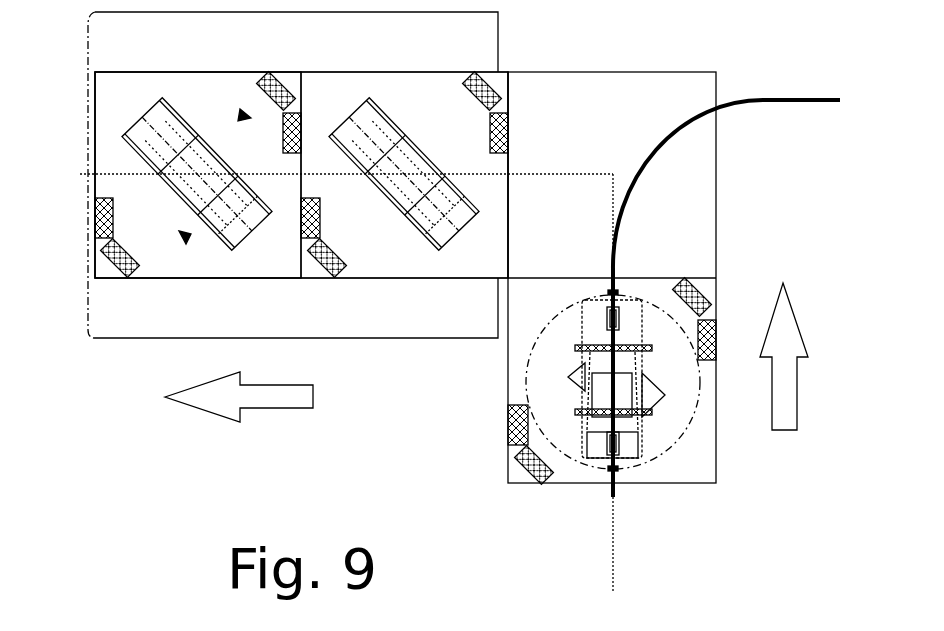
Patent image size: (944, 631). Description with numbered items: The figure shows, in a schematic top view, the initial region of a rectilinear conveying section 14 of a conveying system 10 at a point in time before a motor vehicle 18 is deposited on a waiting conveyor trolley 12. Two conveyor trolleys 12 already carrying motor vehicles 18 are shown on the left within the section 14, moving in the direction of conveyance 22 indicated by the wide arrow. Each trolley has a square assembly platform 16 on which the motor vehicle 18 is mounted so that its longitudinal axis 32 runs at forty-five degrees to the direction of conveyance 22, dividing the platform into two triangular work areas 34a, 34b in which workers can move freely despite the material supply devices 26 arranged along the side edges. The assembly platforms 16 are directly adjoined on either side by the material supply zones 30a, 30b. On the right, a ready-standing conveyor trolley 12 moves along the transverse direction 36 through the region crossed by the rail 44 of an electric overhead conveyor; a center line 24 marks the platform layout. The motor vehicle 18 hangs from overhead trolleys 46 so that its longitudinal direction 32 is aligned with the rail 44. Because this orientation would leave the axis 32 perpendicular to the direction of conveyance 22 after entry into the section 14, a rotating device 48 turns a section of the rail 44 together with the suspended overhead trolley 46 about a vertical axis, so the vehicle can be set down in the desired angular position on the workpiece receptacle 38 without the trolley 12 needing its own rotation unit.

The conveying system 10 is at (130, 460).
The conveyor trolley 12 is at (81, 92).
The rectilinear conveying section 14 is at (441, 380).
The assembly platform 16 is at (90, 270).
The motor vehicle 18 is at (140, 133).
The direction of conveyance 22 is at (270, 402).
The center line 24 is at (110, 178).
The material supply device 26 is at (283, 85).
The material supply zone 30a is at (495, 35).
The material supply zone 30b is at (108, 330).
The longitudinal axis 32 is at (140, 114).
The triangular work area 34a is at (241, 114).
The triangular work area 34b is at (188, 238).
The transverse direction 36 is at (785, 393).
The workpiece receptacle 38 is at (655, 398).
The rail 44 is at (762, 104).
The overhead trolley 46 is at (613, 212).
The rotating device 48 is at (637, 284).